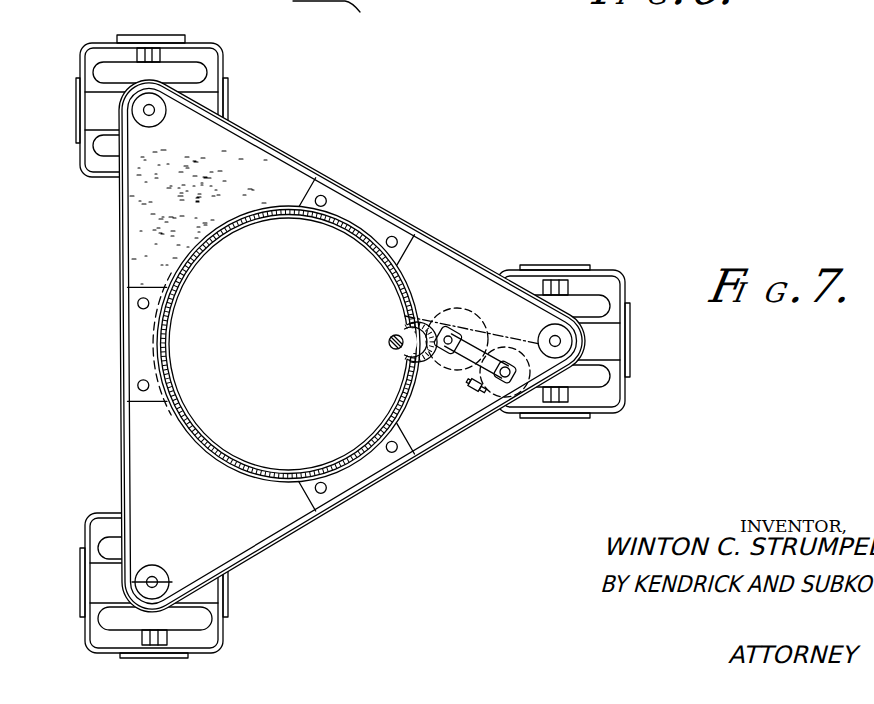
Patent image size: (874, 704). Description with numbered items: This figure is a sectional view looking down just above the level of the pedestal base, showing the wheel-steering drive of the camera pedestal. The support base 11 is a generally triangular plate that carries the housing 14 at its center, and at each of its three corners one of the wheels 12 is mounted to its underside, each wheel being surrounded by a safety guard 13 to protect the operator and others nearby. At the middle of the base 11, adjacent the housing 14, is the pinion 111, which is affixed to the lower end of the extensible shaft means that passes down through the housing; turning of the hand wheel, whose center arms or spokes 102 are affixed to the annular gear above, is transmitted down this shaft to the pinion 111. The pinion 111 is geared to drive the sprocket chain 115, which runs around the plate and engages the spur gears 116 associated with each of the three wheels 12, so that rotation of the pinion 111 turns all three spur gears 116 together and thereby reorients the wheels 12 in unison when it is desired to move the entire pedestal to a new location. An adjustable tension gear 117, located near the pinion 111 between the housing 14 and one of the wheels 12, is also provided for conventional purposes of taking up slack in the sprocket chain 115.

The support base 11 is at (352, 346).
The wheels 12 is at (195, 72).
The safety guards 13 is at (100, 43).
The housing 14 is at (242, 457).
The center arms or spokes 102 is at (349, 19).
The pinion 111 is at (387, 363).
The sprocket chain 115 is at (292, 164).
The spur gears 116 is at (156, 118).
The adjustable tension gear 117 is at (512, 385).